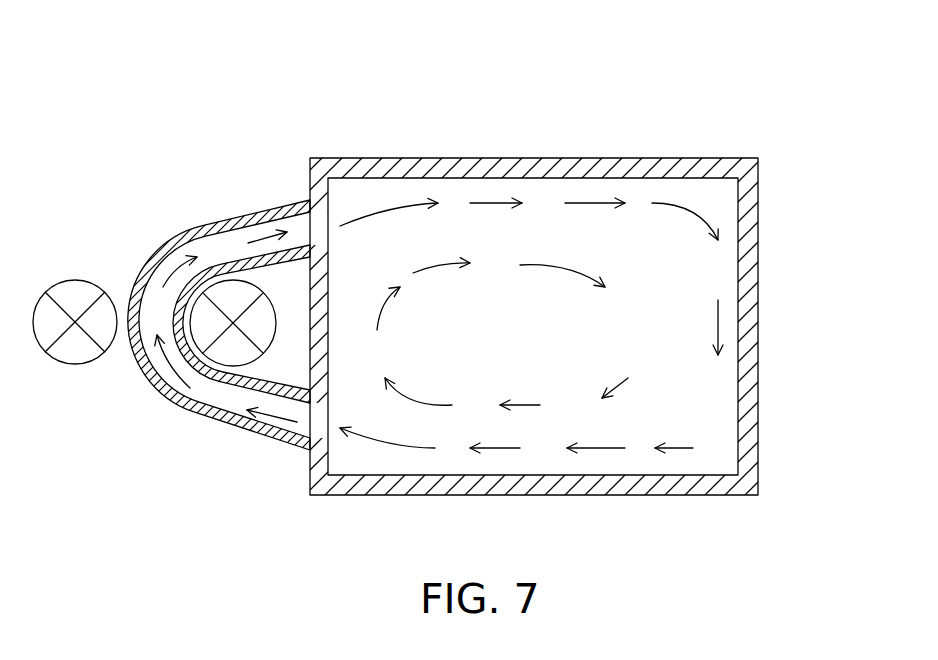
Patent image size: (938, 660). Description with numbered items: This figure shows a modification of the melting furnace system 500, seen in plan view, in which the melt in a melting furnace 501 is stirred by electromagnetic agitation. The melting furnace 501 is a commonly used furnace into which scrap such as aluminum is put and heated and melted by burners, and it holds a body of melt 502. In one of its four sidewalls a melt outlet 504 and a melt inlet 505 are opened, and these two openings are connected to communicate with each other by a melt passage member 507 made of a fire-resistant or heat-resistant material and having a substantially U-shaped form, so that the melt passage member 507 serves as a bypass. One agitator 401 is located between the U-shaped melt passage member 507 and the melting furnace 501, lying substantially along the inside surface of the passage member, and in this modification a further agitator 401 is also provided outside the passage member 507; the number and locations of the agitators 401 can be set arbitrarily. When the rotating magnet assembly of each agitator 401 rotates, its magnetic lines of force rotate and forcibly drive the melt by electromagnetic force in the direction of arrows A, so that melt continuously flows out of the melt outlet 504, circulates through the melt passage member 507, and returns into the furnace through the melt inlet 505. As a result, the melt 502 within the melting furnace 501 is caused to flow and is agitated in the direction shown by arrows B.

The melting furnace system 500 is at (576, 262).
The melting furnace 501 is at (757, 251).
The melt 502 is at (452, 228).
The melt outlet 504 is at (328, 442).
The melt inlet 505 is at (328, 202).
The melt passage member 507 is at (205, 423).
The agitator 401 is at (83, 296).
The arrows A is at (165, 370).
The arrows B is at (630, 325).